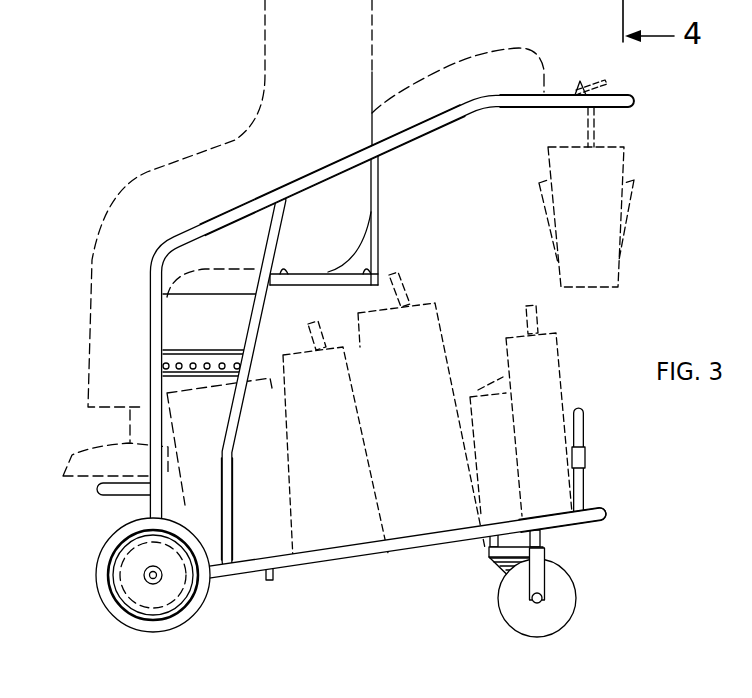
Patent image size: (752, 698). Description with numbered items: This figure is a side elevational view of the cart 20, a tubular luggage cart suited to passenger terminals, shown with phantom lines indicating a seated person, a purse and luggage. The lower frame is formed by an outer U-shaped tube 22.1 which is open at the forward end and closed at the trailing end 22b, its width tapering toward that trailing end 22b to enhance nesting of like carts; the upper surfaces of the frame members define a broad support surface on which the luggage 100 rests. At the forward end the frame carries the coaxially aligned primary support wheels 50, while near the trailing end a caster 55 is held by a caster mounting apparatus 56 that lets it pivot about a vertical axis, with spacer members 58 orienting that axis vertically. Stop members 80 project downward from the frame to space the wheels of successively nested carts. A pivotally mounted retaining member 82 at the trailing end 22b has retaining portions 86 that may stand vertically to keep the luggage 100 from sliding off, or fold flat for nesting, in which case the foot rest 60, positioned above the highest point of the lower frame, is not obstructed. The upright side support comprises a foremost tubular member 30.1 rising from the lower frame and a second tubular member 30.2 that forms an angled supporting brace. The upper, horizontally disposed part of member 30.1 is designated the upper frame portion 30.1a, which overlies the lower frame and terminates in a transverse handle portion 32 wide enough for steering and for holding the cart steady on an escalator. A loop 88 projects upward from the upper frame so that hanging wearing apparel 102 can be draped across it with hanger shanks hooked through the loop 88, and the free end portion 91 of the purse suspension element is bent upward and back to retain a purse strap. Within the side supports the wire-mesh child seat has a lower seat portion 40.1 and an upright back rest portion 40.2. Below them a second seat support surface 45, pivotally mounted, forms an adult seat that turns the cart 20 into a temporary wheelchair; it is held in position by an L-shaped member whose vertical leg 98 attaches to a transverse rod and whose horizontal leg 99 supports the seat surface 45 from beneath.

The cart 20 is at (636, 253).
The outer U-shaped tube 22.1 is at (376, 552).
The trailing end 22b is at (612, 512).
The first tubular member of upright side support 30.1 is at (150, 302).
The upper frame portion 30.1a is at (449, 125).
The second tubular member of upright side support 30.2 is at (251, 495).
The handle portion 32 is at (636, 97).
The lower child seat portion 40.1 is at (200, 351).
The upright back rest portion 40.2 is at (255, 347).
The second seat support surface 45 is at (318, 273).
The primary support wheels 50 is at (98, 578).
The caster 55 is at (503, 607).
The caster mounting apparatus 56 is at (494, 569).
The spacer members 58 is at (543, 540).
The foot rest 60 is at (110, 497).
The stop members 80 is at (270, 582).
The retaining member 82 is at (583, 413).
The retaining portions 86 is at (580, 492).
The loop 88 is at (578, 83).
The free end portion of purse suspension element 91 is at (603, 88).
The vertical leg 98 is at (378, 230).
The horizontal leg 99 is at (300, 283).
The luggage 100 is at (325, 347).
The hanging wearing apparel 102 is at (476, 55).